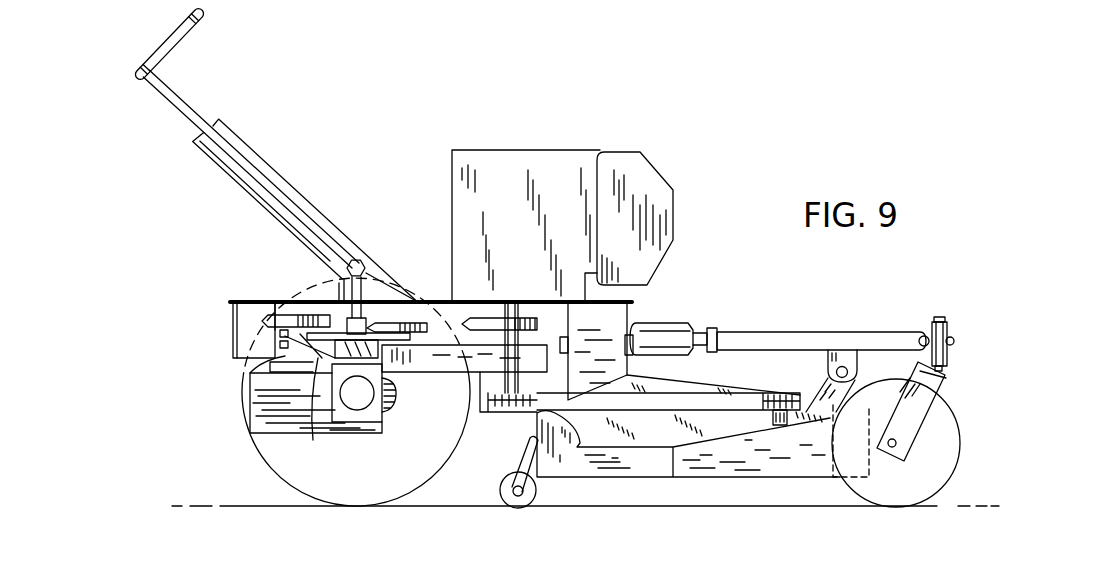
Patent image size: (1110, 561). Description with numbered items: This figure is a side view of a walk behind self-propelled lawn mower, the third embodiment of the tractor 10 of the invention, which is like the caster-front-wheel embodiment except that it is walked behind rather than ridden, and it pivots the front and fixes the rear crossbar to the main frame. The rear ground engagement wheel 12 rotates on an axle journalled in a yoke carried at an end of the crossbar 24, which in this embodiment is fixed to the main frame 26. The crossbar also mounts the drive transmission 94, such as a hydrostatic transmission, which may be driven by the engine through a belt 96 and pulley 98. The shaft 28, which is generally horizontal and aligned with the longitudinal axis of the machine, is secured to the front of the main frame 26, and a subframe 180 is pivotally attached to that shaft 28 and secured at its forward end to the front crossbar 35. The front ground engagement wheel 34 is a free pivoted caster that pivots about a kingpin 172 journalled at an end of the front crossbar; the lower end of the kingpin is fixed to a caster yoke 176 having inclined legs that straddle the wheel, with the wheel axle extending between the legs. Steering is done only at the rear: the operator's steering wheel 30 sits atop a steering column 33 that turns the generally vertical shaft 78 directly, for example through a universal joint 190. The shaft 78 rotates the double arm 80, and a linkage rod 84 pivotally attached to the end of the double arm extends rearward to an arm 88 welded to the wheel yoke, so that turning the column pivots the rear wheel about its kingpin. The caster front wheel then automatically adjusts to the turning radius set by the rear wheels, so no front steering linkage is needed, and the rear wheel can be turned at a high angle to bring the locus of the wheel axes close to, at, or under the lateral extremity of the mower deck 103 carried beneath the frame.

The steering wheel 30 is at (176, 46).
The steering column 33 is at (198, 113).
The universal joint 190 is at (360, 260).
The shaft 78 is at (364, 293).
The double arm 80 is at (407, 316).
The belt 96 is at (268, 308).
The main frame 26 is at (246, 296).
The pulley 98 is at (262, 321).
The arm 88 is at (272, 366).
The linkage rod 84 is at (300, 370).
The rear ground engagement wheel 12 is at (268, 463).
The crossbar 24 is at (313, 440).
The drive transmission 94 is at (372, 414).
The shaft 28 is at (636, 330).
The subframe 180 is at (818, 326).
The kingpin 172 is at (938, 317).
The front crossbar 35 is at (953, 341).
The caster yoke 176 is at (940, 387).
The front ground engagement wheel 34 is at (962, 443).
The mower deck 103 is at (688, 470).
The tractor 10 is at (714, 157).